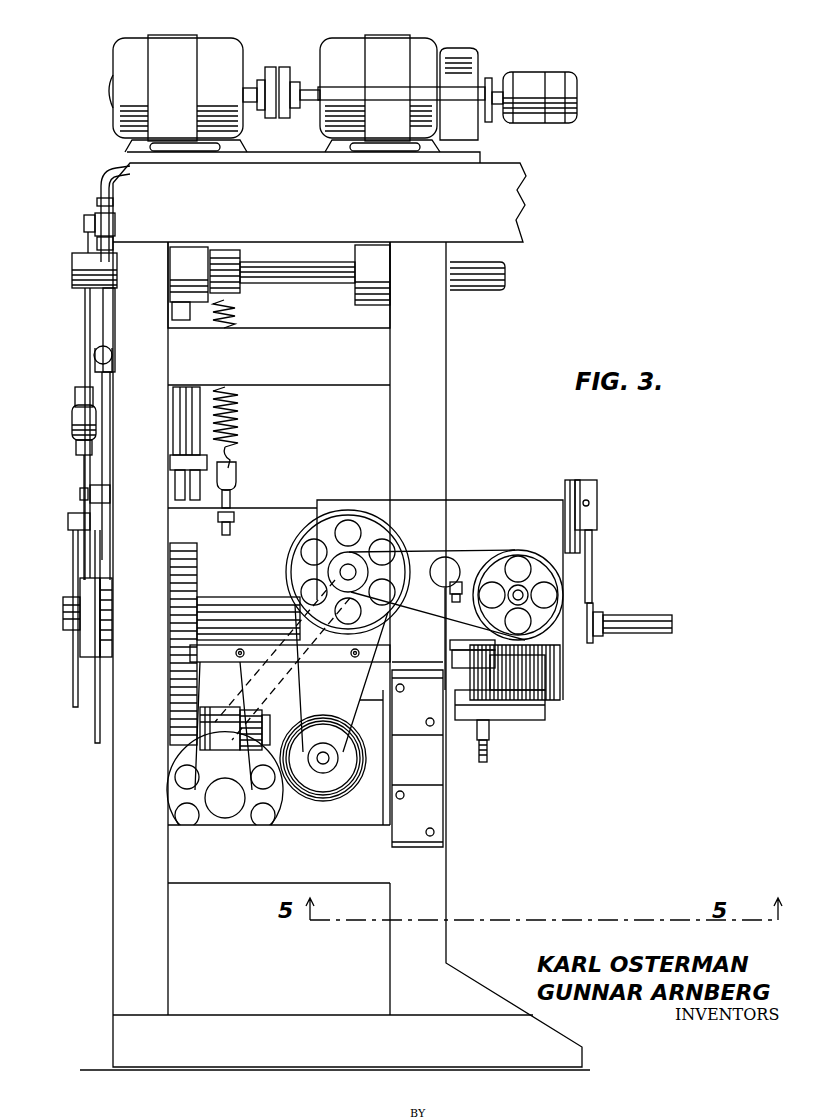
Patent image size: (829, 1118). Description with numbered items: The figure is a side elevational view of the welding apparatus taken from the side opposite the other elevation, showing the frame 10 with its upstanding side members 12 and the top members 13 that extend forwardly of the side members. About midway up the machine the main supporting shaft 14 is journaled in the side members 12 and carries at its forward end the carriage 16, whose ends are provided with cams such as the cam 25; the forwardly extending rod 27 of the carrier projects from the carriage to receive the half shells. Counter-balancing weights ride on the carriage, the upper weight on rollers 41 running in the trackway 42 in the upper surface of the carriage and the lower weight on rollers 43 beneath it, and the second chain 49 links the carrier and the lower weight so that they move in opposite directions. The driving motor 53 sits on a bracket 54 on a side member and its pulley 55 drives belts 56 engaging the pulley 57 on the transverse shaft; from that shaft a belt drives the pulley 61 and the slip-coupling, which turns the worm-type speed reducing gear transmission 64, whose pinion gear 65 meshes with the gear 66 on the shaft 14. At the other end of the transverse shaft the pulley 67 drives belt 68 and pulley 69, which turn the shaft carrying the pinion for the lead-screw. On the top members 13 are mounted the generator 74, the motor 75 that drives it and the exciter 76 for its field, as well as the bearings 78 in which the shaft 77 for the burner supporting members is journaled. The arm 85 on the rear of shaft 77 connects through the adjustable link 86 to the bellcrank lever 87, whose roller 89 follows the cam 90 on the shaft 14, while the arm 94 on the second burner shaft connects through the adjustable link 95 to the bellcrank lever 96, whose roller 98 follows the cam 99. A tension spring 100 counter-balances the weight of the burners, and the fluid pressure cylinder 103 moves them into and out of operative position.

The frame 10 is at (455, 893).
The upstanding side members 12 is at (448, 870).
The top members 13 is at (490, 163).
The main supporting shaft 14 is at (244, 598).
The carriage 16 is at (438, 635).
The cam 25 is at (492, 641).
The forwardly extending rod 27 is at (622, 626).
The rollers 41 is at (463, 587).
The trackway 42 is at (452, 589).
The rollers 43 is at (460, 653).
The second chain 49 is at (513, 682).
The driving motor 53 is at (352, 795).
The bracket 54 is at (390, 806).
The pulley 55 is at (320, 775).
The belts 56 is at (293, 702).
The pulley 57 is at (306, 523).
The pulley 61 is at (264, 733).
The speed reducing gear transmission 64 is at (231, 708).
The pinion gear 65 is at (180, 725).
The gear 66 is at (195, 583).
The pulley 67 is at (355, 560).
The belt 68 is at (468, 547).
The pulley 69 is at (521, 549).
The generator 74 is at (208, 42).
The motor 75 is at (356, 40).
The exciter 76 is at (528, 70).
The shaft 77 is at (495, 286).
The bearings 78 is at (370, 305).
The arm 85 is at (115, 313).
The adjustable link 86 is at (112, 358).
The bellcrank lever 87 is at (102, 465).
The roller 89 is at (100, 486).
The cam 90 is at (95, 725).
The arm 94 is at (85, 313).
The adjustable link 95 is at (75, 412).
The bellcrank lever 96 is at (82, 491).
The roller 98 is at (70, 516).
The cam 99 is at (73, 690).
The tension spring 100 is at (238, 430).
The fluid pressure cylinder 103 is at (180, 416).